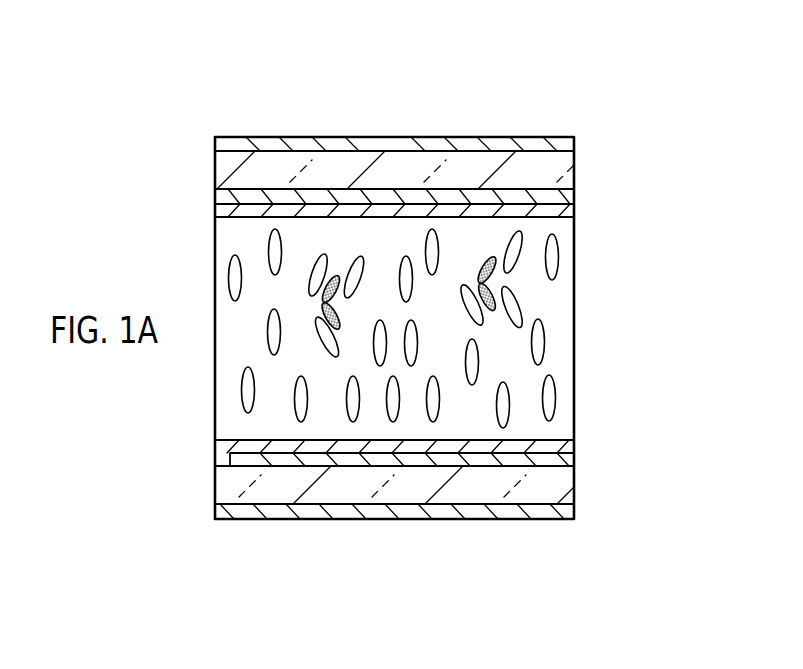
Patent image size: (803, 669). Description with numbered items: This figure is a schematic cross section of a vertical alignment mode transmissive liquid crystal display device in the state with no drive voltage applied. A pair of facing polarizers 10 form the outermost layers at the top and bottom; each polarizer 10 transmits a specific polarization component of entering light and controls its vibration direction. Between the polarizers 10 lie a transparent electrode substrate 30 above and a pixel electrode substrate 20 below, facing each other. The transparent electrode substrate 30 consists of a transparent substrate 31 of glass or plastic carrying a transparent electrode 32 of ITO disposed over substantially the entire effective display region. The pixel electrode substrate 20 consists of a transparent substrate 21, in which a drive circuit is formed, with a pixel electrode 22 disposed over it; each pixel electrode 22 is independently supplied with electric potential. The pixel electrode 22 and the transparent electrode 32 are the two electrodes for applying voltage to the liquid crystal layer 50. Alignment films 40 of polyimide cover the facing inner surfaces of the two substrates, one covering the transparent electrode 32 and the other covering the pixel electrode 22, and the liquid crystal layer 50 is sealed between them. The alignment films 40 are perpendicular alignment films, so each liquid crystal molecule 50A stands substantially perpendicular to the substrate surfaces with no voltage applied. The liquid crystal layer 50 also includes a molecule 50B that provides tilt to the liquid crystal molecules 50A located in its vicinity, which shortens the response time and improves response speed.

The polarizer 10 is at (247, 138).
The pixel electrode substrate 20 is at (394, 546).
The transparent substrate 21 is at (350, 592).
The pixel electrode 22 is at (383, 458).
The transparent electrode substrate 30 is at (394, 110).
The transparent substrate 31 is at (382, 162).
The transparent electrode 32 is at (350, 65).
The alignment film 40 is at (567, 208).
The liquid crystal layer 50 is at (470, 327).
The liquid crystal molecule 50A is at (541, 345).
The molecule 50B is at (566, 283).